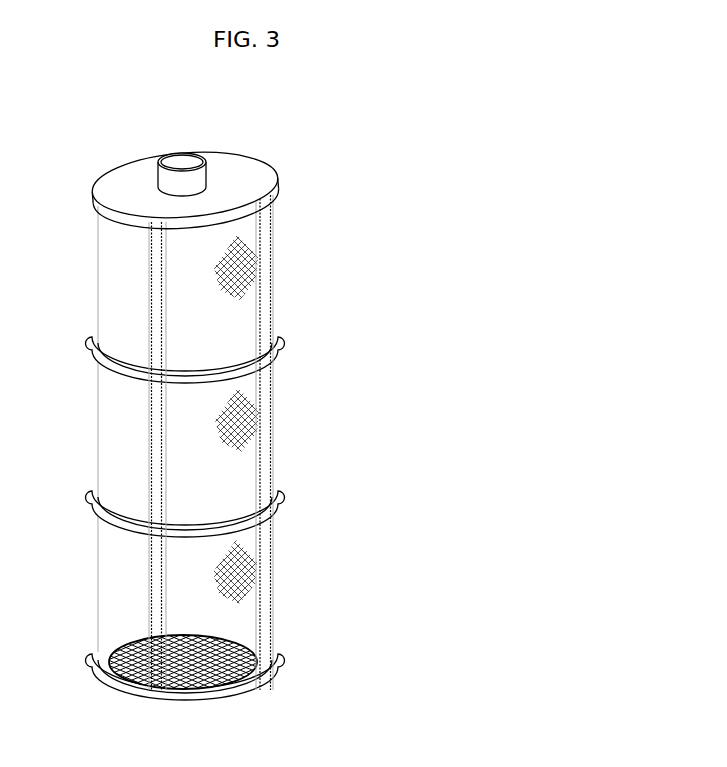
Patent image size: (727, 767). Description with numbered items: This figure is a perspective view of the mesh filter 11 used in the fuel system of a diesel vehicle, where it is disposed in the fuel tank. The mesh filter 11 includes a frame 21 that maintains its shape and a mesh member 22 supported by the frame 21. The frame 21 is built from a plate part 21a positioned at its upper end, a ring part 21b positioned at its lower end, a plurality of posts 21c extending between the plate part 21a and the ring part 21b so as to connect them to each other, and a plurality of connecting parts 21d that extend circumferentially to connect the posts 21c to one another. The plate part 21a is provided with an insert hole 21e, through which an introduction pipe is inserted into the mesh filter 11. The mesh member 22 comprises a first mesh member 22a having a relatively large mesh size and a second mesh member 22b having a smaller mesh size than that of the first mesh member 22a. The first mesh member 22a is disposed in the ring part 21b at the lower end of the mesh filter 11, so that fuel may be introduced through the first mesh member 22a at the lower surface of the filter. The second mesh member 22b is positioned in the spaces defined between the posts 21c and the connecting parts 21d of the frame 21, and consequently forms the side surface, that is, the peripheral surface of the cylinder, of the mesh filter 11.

The mesh filter 11 is at (300, 258).
The frame 21 is at (270, 171).
The plate part 21a is at (232, 178).
The ring part 21b is at (258, 684).
The posts 21c is at (268, 316).
The connecting parts 21d is at (205, 378).
The insert hole 21e is at (175, 163).
The mesh member 22 is at (371, 540).
The first mesh member 22a is at (255, 645).
The second mesh member 22b is at (250, 560).